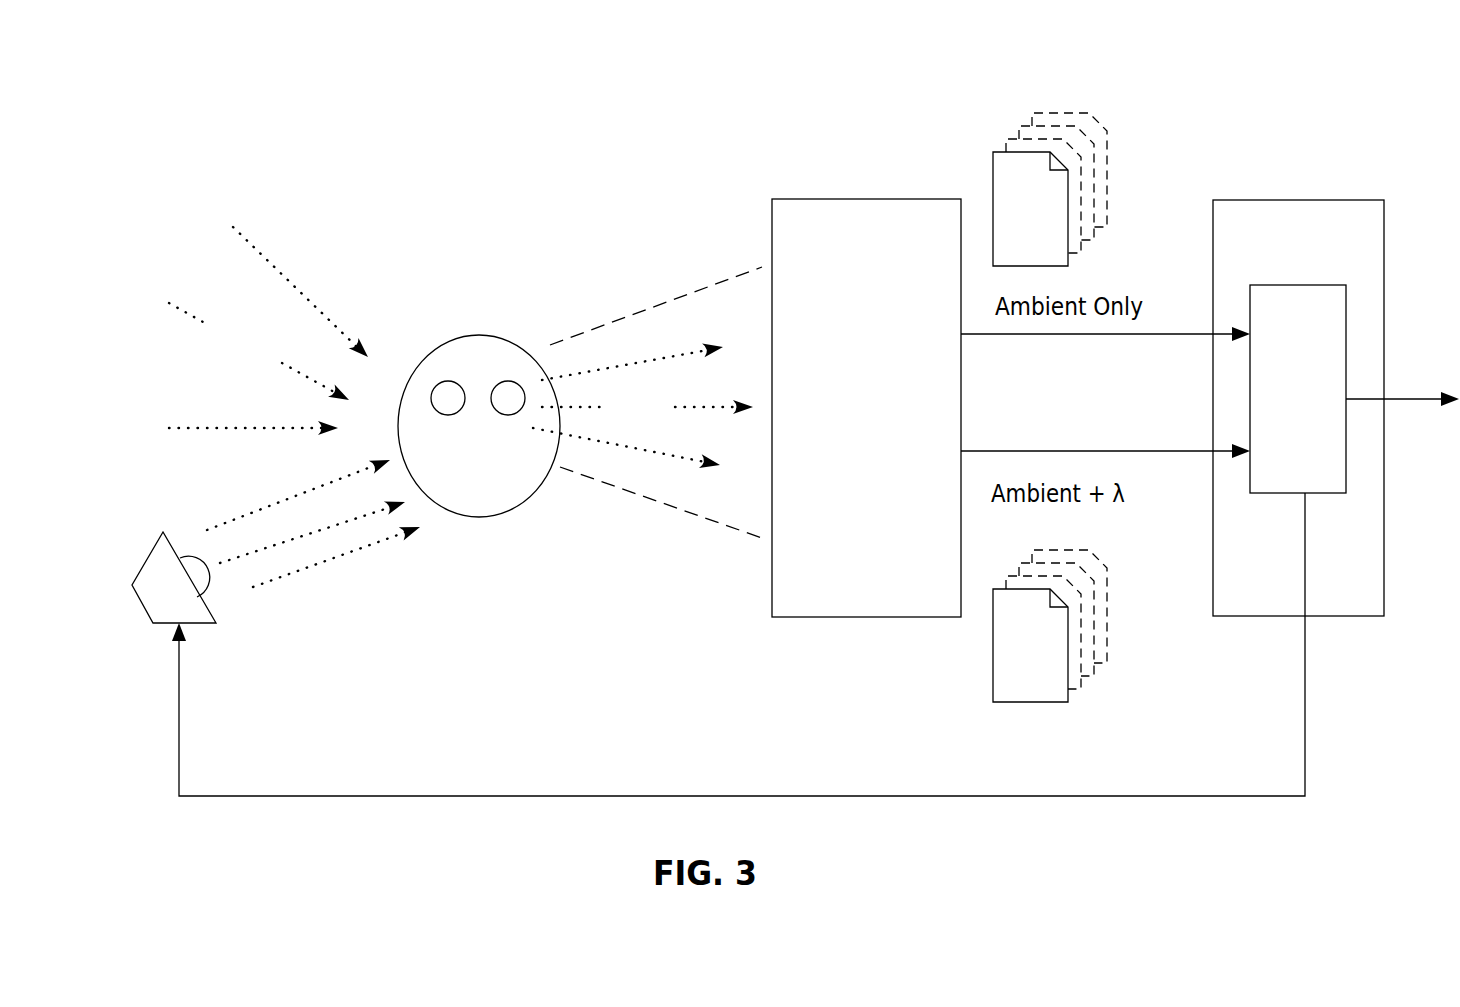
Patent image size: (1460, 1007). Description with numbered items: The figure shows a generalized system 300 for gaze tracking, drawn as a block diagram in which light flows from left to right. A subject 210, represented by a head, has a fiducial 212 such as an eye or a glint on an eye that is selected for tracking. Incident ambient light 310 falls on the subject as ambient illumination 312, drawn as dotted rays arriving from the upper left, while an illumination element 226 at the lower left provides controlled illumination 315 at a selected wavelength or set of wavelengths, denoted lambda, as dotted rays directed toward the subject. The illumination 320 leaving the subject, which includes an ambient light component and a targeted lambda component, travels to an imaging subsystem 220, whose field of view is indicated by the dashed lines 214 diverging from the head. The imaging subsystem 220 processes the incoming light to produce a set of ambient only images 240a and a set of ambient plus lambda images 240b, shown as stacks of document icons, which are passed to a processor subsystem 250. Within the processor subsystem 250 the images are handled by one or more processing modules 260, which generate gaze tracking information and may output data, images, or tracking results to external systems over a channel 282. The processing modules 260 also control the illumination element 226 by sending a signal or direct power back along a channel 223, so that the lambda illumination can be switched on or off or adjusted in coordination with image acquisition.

The system 300 is at (653, 84).
The incident ambient light 310 is at (178, 246).
The ambient illumination 312 is at (260, 356).
The illumination element 226 is at (139, 568).
The illumination at selected wavelengths 315 is at (333, 536).
The subject 210 is at (500, 535).
The fiducial 212 is at (488, 373).
The field of view 214 is at (616, 276).
The illumination 320 is at (657, 422).
The imaging subsystem 220 is at (830, 612).
The ambient only images 240a is at (966, 152).
The ambient plus lambda images 240b is at (966, 691).
The processor subsystem 250 is at (1270, 608).
The processing modules 260 is at (1307, 489).
The channel 282 is at (1414, 396).
The channel 223 is at (334, 795).